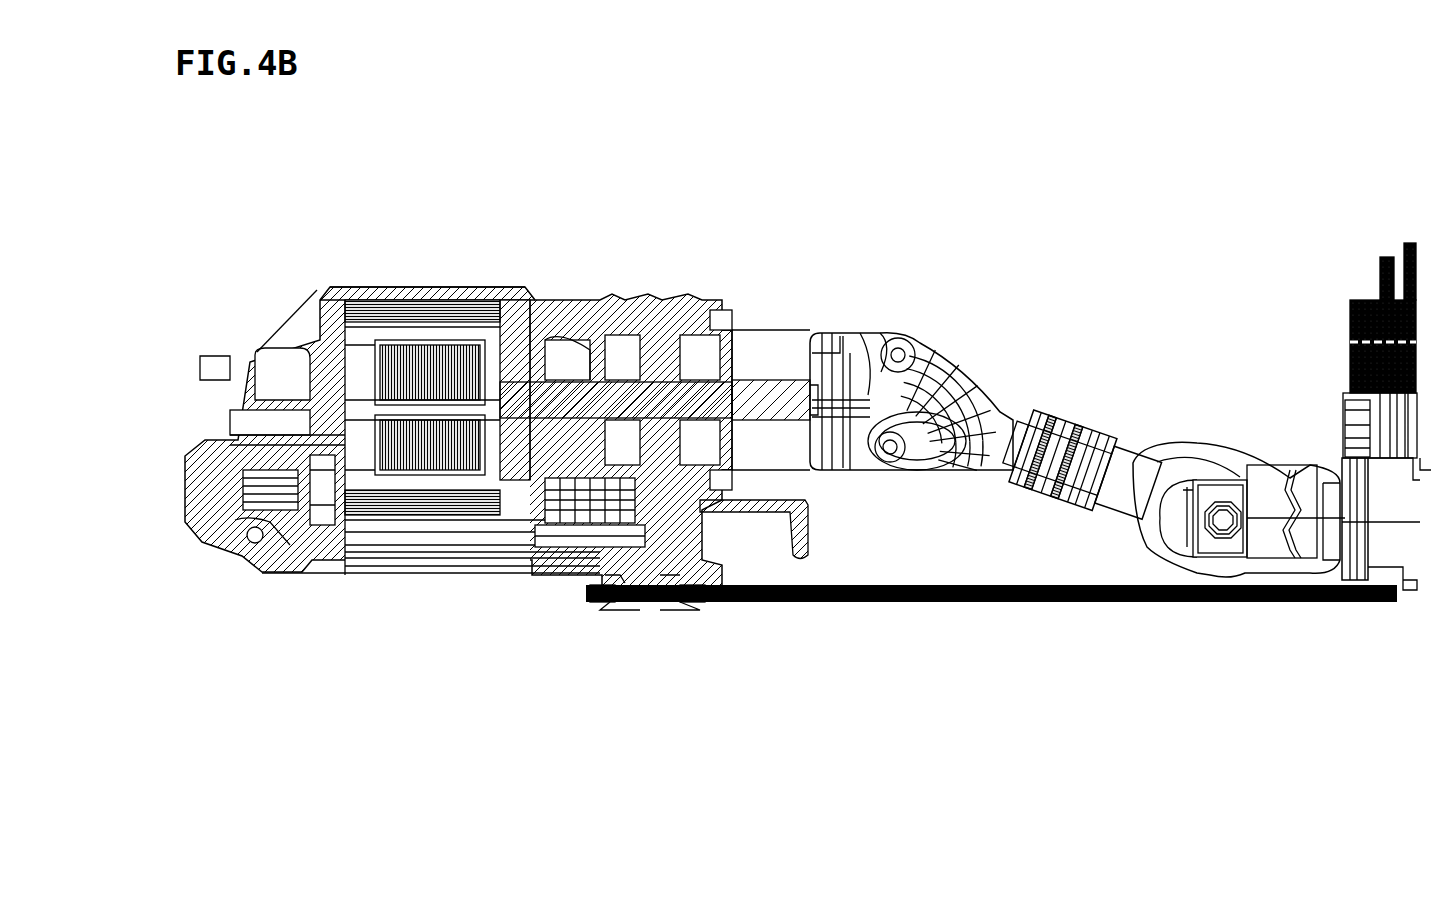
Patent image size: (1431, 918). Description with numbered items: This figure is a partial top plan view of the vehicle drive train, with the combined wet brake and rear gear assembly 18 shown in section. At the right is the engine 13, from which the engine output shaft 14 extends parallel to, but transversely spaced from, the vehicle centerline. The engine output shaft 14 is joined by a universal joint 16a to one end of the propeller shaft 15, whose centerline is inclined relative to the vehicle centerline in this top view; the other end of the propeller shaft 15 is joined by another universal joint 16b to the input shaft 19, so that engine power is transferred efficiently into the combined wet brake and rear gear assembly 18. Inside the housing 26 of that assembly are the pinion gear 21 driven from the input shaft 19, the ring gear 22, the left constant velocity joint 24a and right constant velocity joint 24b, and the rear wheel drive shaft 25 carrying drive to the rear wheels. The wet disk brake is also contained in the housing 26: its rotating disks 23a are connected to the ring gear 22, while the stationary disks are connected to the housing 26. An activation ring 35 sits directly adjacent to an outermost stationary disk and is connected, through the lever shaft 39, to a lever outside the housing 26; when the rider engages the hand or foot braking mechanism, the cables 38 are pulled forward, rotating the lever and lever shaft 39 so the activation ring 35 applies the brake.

The engine 13 is at (1362, 300).
The engine output shaft 14 is at (1338, 455).
The propeller shaft 15 is at (1134, 468).
The universal joint 16a is at (1223, 518).
The universal joint 16b is at (898, 355).
The combined wet brake and rear gear assembly 18 is at (251, 253).
The input shaft 19 is at (774, 388).
The pinion gear 21 is at (588, 370).
The ring gear 22 is at (290, 435).
The rotating disks 23a is at (597, 498).
The left constant velocity joint 24a is at (395, 292).
The right constant velocity joint 24b is at (370, 555).
The rear wheel drive shaft 25 is at (452, 360).
The housing 26 is at (268, 370).
The activation ring 35 is at (262, 530).
The cables 38 is at (861, 623).
The lever shaft 39 is at (663, 557).